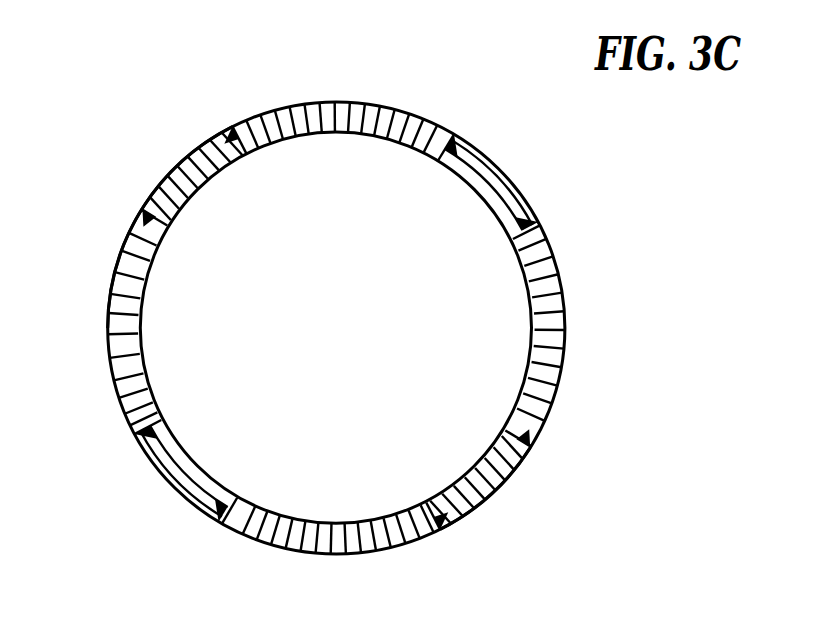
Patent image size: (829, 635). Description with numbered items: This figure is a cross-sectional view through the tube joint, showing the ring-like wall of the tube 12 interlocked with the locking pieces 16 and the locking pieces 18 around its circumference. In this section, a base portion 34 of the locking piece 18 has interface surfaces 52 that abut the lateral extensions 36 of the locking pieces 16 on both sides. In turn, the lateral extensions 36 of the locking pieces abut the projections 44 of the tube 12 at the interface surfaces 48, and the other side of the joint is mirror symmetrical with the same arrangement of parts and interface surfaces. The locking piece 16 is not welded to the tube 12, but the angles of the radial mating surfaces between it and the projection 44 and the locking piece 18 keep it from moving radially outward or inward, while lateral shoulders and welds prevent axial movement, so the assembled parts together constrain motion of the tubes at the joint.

The tube 12 is at (370, 103).
The locking piece 16 is at (185, 158).
The locking piece 18 is at (108, 305).
The base portion 34 is at (126, 238).
The side extension 36 is at (165, 172).
The projection 44 is at (331, 107).
The interface surface 48 is at (231, 128).
The interface surface 52 is at (142, 207).